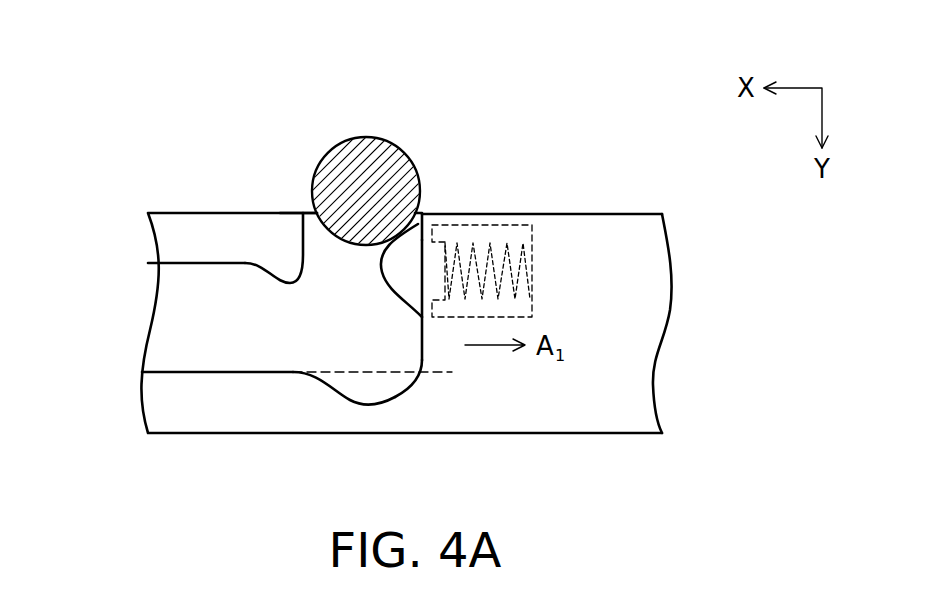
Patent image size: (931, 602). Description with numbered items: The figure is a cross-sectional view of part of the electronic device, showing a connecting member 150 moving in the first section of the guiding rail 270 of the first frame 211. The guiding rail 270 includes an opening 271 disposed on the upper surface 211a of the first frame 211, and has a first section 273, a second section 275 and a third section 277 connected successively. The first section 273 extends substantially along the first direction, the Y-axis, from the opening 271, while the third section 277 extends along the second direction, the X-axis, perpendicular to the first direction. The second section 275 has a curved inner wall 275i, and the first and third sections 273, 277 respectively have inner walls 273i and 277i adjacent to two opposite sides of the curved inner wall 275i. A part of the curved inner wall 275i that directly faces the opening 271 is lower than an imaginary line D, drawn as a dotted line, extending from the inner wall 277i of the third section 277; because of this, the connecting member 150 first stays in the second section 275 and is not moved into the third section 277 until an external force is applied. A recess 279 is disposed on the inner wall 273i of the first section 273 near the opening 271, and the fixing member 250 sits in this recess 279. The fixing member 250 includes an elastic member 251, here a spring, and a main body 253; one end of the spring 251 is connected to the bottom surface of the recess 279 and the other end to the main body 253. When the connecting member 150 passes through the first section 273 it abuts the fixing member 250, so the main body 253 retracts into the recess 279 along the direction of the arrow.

The guiding rail 270 is at (43, 53).
The third section 277 is at (183, 283).
The second section 275 is at (292, 303).
The first section 273 is at (300, 212).
The opening 271 is at (313, 265).
The connecting member 150 is at (335, 147).
The fixing member 250 is at (357, 53).
The main body 253 is at (405, 255).
The elastic member 251 is at (470, 226).
The recess 279 is at (508, 225).
The upper surface 211a is at (635, 214).
The first frame 211 is at (652, 302).
The inner wall 277i is at (247, 368).
The imaginary line D is at (304, 349).
The curved inner wall 275i is at (381, 402).
The inner wall 273i is at (422, 313).